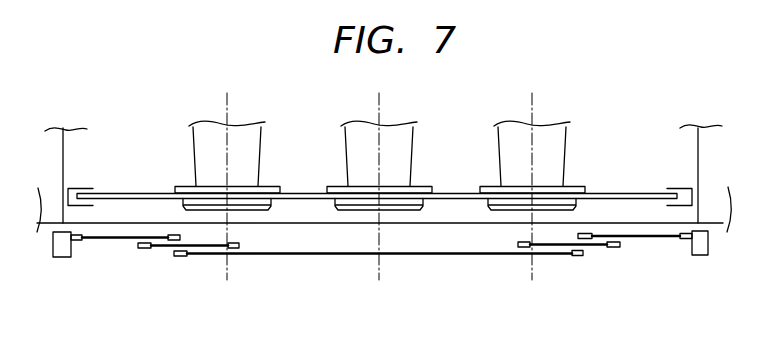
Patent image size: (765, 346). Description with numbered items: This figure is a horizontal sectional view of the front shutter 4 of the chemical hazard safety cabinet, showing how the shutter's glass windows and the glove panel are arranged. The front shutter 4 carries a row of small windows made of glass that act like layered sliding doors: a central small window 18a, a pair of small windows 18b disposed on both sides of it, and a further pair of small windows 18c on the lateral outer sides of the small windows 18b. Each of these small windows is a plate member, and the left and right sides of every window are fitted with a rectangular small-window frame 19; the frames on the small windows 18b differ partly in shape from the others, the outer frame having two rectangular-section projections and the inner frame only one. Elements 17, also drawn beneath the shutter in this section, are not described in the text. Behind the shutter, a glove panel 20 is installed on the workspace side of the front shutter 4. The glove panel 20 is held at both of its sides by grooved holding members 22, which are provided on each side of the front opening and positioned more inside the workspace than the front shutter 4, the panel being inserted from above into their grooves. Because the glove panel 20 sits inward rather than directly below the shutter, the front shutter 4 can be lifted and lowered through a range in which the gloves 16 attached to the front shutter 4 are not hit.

The front shutter 4 is at (58, 258).
The gloves 16 is at (210, 118).
The piezoelectric element 17 is at (250, 210).
The small window 18a is at (350, 255).
The small windows 18b is at (213, 254).
The small windows 18c is at (98, 240).
The small-window frame 19 is at (143, 250).
The glove panel 20 is at (123, 192).
The grooved holding member 22 is at (673, 187).